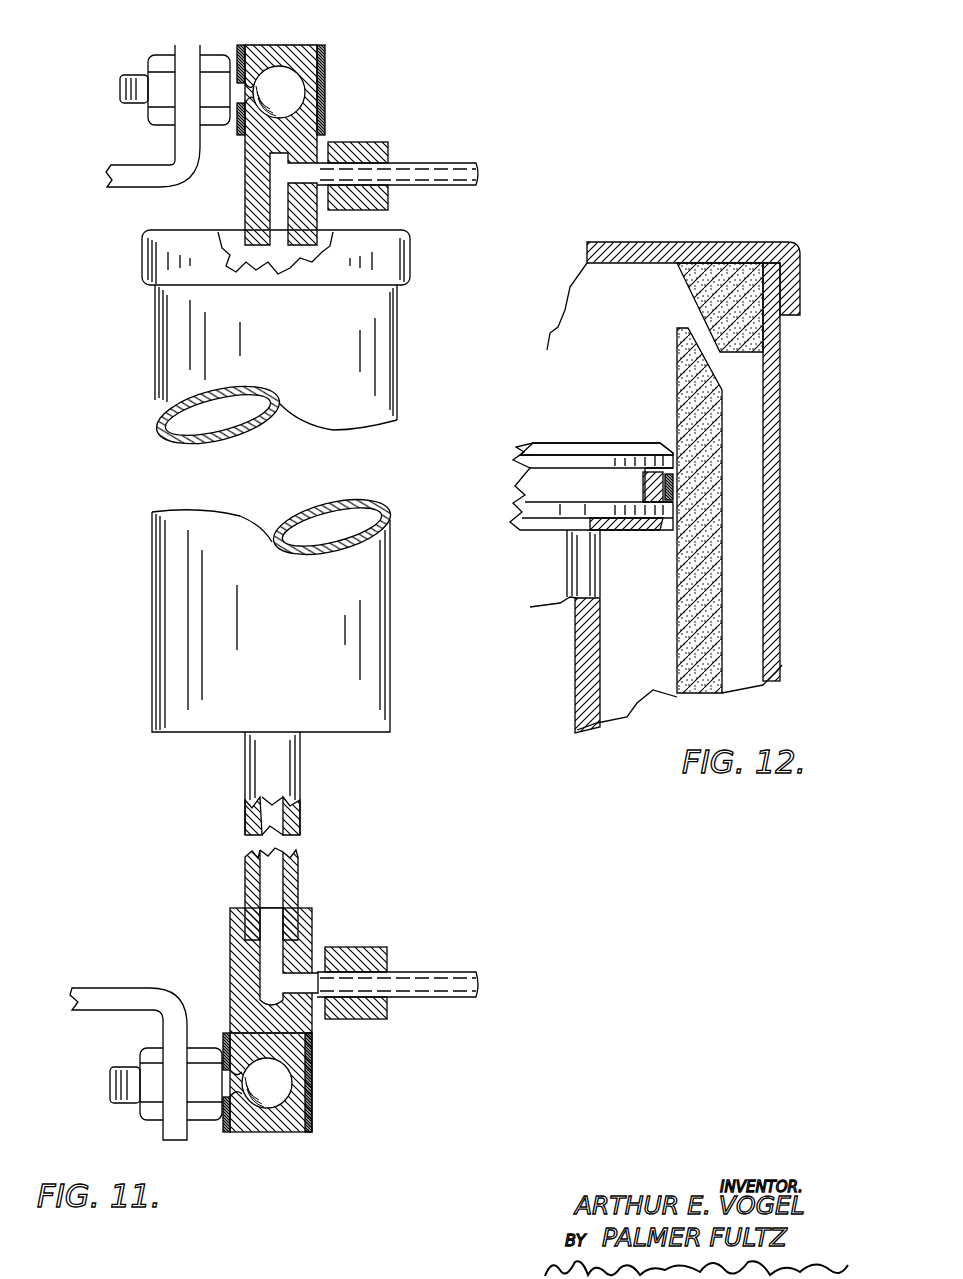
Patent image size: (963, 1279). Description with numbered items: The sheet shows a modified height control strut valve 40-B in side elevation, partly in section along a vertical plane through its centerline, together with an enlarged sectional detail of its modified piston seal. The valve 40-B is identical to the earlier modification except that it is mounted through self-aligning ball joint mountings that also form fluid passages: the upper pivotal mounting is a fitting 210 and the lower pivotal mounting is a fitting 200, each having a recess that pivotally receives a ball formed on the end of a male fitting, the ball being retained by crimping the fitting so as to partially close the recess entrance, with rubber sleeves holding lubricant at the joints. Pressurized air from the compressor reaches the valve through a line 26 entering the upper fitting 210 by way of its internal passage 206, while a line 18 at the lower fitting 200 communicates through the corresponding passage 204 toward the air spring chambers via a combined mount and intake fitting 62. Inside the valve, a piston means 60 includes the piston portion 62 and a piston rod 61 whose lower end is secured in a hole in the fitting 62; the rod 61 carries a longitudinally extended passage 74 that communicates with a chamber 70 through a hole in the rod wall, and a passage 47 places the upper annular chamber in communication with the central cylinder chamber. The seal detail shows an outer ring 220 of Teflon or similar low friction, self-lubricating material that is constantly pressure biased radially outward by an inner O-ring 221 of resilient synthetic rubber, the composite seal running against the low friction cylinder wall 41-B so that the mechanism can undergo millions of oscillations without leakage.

In FIG. 11, the fitting 210 is at (300, 45).
In FIG. 11, the line 26 is at (445, 160).
In FIG. 11, the passage 206 is at (305, 172).
In FIG. 11, the strut valve 40-B is at (153, 357).
In FIG. 12, the strut valve 40-B is at (710, 240).
In FIG. 11, the piston rod 61 is at (248, 807).
In FIG. 12, the piston rod 61 is at (600, 637).
In FIG. 11, the passage 74 is at (300, 808).
In FIG. 12, the passage 74 is at (553, 698).
In FIG. 11, the piston means 60 is at (300, 872).
In FIG. 12, the piston means 60 is at (577, 443).
In FIG. 11, the fitting 200 is at (230, 935).
In FIG. 11, the bore passage 204 is at (307, 982).
In FIG. 11, the line 18 is at (460, 972).
In FIG. 12, the passage 47 is at (693, 325).
In FIG. 12, the combined mount and intake fitting 62 is at (603, 440).
In FIG. 12, the inner wall 41-B is at (752, 457).
In FIG. 12, the outer ring 220 is at (733, 490).
In FIG. 12, the O-ring 221 is at (640, 490).
In FIG. 12, the chamber 70 is at (630, 672).